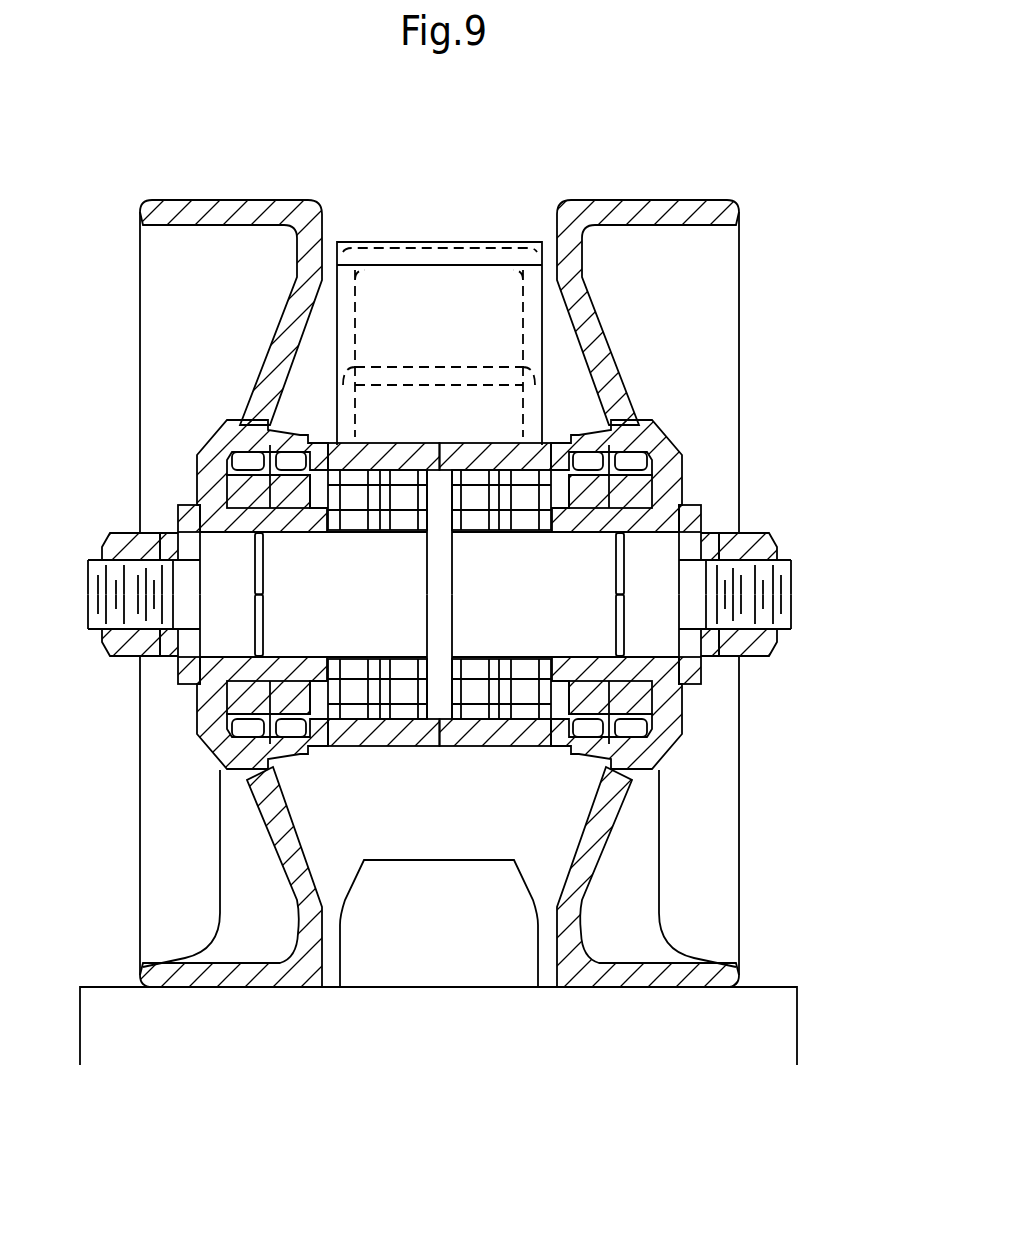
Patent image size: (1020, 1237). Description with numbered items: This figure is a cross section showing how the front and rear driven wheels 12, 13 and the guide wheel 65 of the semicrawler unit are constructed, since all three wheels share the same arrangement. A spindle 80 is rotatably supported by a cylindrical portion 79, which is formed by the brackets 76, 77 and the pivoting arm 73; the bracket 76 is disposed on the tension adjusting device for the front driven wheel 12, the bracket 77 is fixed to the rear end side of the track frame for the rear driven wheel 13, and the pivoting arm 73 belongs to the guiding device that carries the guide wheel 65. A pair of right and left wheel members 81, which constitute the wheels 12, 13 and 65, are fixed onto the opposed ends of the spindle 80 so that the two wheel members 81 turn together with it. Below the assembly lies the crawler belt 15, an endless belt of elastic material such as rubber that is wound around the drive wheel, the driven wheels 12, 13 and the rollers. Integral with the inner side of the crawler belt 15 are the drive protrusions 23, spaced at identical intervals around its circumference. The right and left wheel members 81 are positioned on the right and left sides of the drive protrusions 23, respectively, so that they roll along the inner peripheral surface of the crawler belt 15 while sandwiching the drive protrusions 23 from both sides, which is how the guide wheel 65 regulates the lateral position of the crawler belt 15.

The front driven wheel 12 is at (507, 546).
The rear driven wheel 13 is at (507, 546).
The guide wheel 65 is at (706, 190).
The bracket 76 is at (455, 300).
The bracket 77 is at (455, 300).
The pivoting arm 73 is at (497, 240).
The cylindrical portion 79 is at (460, 733).
The spindle 80 is at (575, 607).
The drive protrusions 23 is at (398, 880).
The crawler belt 15 is at (100, 985).
The wheel members 81 is at (228, 989).